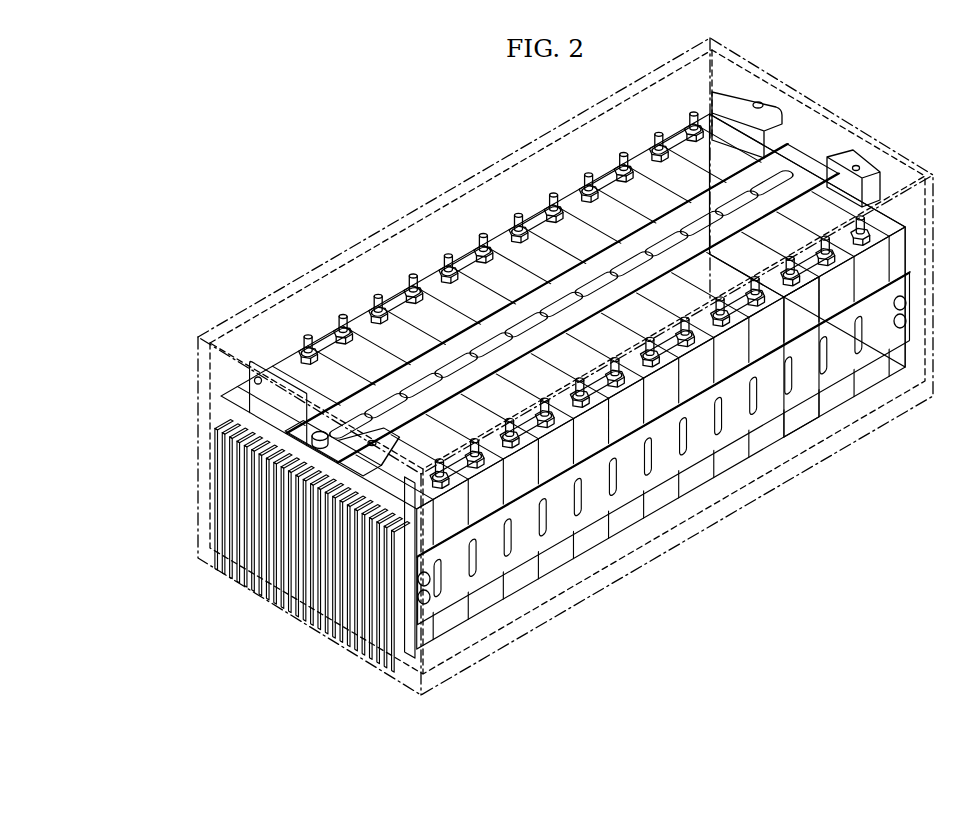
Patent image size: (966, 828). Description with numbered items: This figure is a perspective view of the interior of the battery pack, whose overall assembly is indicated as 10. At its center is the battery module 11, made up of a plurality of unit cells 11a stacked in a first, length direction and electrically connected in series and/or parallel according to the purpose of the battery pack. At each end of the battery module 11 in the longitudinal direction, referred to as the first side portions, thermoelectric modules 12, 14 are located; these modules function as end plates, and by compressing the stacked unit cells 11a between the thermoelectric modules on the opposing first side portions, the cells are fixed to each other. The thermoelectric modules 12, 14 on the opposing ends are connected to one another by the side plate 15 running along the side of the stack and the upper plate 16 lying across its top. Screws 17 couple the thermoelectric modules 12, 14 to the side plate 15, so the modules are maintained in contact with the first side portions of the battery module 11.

The battery module 10 is at (621, 656).
The battery module 11 is at (767, 446).
The unit cell 11a is at (798, 430).
The thermoelectric module 12 is at (247, 397).
The thermoelectric module 14 is at (246, 467).
The side plate 15 is at (663, 470).
The upper plate 16 is at (570, 290).
The screw 17 is at (435, 603).